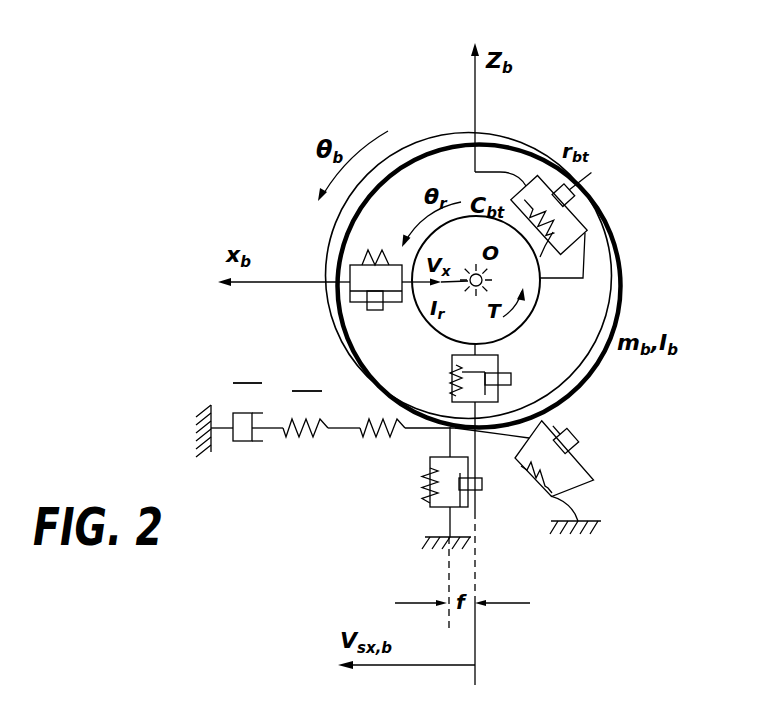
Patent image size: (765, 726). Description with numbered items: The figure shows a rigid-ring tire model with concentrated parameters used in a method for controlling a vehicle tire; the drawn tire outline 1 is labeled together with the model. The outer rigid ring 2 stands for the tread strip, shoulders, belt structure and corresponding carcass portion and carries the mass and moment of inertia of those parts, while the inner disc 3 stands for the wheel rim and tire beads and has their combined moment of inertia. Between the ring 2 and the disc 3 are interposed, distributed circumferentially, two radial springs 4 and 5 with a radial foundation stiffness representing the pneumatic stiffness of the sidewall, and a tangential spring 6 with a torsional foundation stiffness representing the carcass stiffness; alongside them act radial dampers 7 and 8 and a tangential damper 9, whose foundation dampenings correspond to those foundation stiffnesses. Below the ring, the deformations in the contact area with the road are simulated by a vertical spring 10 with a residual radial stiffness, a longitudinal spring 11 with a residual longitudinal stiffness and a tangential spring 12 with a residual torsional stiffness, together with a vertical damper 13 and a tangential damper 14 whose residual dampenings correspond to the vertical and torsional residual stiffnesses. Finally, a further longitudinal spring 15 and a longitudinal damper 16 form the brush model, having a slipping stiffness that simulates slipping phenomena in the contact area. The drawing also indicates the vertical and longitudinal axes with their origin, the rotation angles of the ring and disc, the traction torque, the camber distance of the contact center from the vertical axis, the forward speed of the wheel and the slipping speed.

The tire body (deformed outline) 1 is at (537, 138).
The rigid ring 2 is at (430, 130).
The disc 3 is at (535, 318).
The radial spring 4 is at (388, 250).
The radial spring 5 is at (450, 373).
The tangential spring 6 is at (541, 244).
The radial damper 7 is at (384, 302).
The radial damper 8 is at (500, 372).
The tangential damper 9 is at (588, 186).
The vertical spring 10 is at (422, 470).
The longitudinal spring 11 is at (366, 420).
The tangential spring 12 is at (554, 469).
The vertical damper 13 is at (482, 478).
The tangential damper 14 is at (578, 428).
The longitudinal spring 15 is at (305, 437).
The longitudinal damper 16 is at (243, 441).